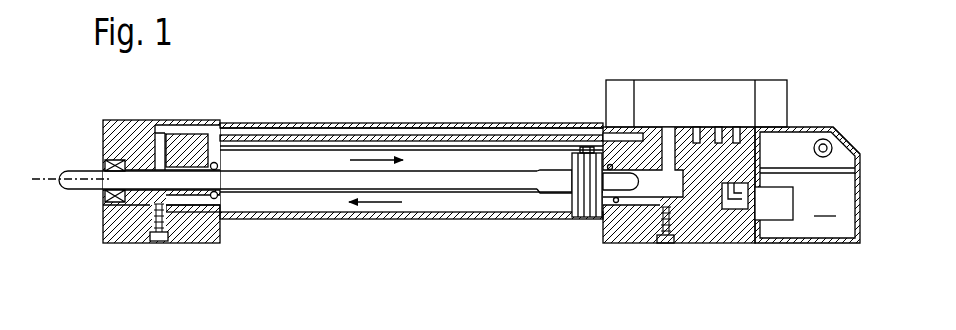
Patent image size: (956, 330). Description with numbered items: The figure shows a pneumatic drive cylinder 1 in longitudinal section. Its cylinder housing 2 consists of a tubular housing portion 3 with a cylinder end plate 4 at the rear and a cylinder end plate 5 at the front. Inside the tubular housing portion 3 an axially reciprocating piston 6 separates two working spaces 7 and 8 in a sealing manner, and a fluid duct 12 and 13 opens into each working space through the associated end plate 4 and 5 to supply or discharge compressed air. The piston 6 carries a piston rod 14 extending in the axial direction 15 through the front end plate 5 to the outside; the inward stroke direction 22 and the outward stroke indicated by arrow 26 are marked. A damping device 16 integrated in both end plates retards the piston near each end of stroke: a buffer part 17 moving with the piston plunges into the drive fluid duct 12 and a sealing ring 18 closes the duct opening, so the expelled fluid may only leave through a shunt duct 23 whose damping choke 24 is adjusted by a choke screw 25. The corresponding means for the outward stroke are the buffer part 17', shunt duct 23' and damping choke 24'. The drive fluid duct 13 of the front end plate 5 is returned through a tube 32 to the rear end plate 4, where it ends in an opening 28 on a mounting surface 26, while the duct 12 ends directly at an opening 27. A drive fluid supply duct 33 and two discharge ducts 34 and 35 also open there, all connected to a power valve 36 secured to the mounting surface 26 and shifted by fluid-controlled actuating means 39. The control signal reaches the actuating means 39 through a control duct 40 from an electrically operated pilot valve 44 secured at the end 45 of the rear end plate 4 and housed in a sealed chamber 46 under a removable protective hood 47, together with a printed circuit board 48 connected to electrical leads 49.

The pneumatic drive cylinder 1 is at (432, 116).
The cylinder housing 2 is at (320, 135).
The tubular housing portion 3 is at (420, 222).
The cylinder end plate 4 is at (620, 235).
The cylinder end plate 5 is at (110, 232).
The piston 6 is at (585, 147).
The working space 7 is at (598, 218).
The working space 8 is at (293, 200).
The drive fluid duct 12 is at (690, 200).
The drive fluid duct 13 is at (192, 150).
The piston rod 14 is at (252, 190).
The axial direction 15 is at (55, 176).
The damping device 16 is at (172, 226).
The buffer part 17 is at (605, 122).
The buffer part 17' is at (541, 222).
The sealing ring 18 is at (607, 162).
The stroke direction 22 is at (370, 162).
The shunt duct 23 is at (632, 257).
The shunt duct 23' is at (195, 245).
The damping choke 24 is at (684, 249).
The damping choke 24' is at (99, 219).
The choke screw 25 is at (668, 244).
The mounting surface 26 is at (380, 206).
The opening 27 is at (692, 127).
The opening 28 is at (648, 127).
The tube 32 is at (278, 122).
The drive fluid supply duct 33 is at (712, 127).
The discharge duct 34 is at (722, 127).
The discharge duct 35 is at (738, 127).
The power valve 36 is at (645, 100).
The actuating means 39 is at (620, 92).
The control duct 40 is at (735, 210).
The pilot valve 44 is at (788, 212).
The end 45 is at (758, 230).
The chamber 46 is at (807, 193).
The protective hood 47 is at (822, 244).
The printed circuit board 48 is at (803, 166).
The electrical leads 49 is at (838, 132).